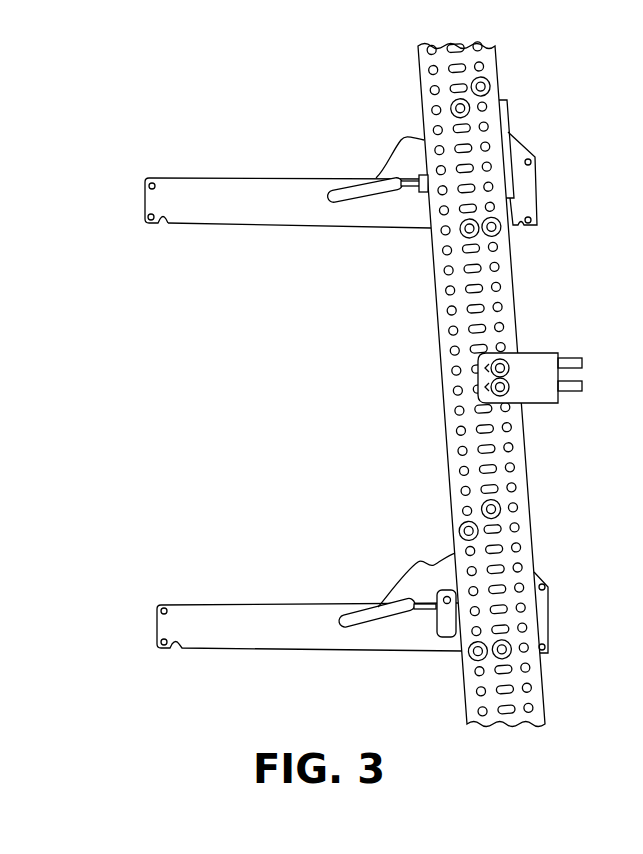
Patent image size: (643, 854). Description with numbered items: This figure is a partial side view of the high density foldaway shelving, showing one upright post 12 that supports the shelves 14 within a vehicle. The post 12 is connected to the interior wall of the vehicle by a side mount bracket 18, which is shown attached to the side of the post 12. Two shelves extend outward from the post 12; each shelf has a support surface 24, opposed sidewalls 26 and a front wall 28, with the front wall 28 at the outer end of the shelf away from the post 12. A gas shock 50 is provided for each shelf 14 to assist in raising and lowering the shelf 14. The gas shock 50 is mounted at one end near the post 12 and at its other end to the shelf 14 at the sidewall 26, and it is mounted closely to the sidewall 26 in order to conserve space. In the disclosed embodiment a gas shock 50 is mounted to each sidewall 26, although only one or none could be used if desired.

The post 12 is at (534, 505).
The shelf 14 is at (157, 607).
The side mount bracket 18 is at (534, 363).
The support surface 24 is at (252, 177).
The sidewall 26 is at (244, 193).
The front wall 28 is at (148, 203).
The gas shock 50 is at (366, 192).